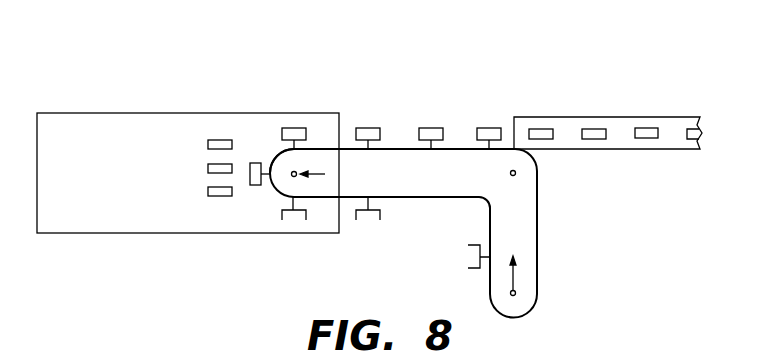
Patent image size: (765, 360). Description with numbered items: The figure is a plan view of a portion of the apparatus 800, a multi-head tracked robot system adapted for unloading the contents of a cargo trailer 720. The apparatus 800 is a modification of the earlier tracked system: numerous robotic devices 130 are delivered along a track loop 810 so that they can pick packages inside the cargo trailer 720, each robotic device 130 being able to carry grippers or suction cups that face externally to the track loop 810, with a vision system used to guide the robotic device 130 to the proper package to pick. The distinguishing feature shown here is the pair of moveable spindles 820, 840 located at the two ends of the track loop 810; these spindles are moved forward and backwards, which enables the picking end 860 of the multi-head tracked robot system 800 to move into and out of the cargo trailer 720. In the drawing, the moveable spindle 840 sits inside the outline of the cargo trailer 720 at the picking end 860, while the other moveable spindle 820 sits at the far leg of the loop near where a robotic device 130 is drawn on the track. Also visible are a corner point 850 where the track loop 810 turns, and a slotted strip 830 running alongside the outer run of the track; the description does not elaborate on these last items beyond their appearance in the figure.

The apparatus 800 is at (645, 53).
The cargo trailer 720 is at (104, 125).
The track 810 is at (537, 223).
The moveable spindle 820 is at (519, 293).
The sensor strip 830 is at (567, 125).
The moveable spindle 840 is at (297, 171).
The track corner point 850 is at (519, 172).
The picking end 860 is at (277, 156).
The robotic device 130 is at (468, 255).